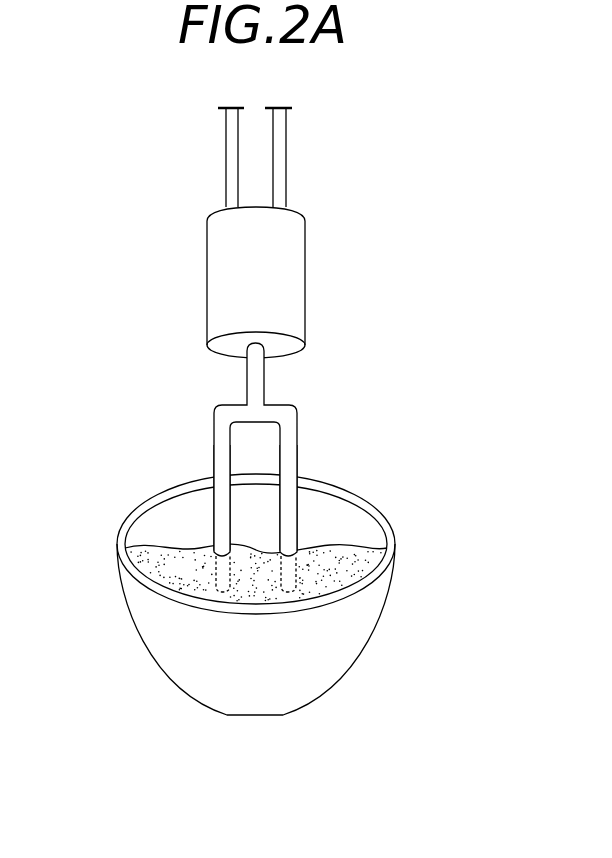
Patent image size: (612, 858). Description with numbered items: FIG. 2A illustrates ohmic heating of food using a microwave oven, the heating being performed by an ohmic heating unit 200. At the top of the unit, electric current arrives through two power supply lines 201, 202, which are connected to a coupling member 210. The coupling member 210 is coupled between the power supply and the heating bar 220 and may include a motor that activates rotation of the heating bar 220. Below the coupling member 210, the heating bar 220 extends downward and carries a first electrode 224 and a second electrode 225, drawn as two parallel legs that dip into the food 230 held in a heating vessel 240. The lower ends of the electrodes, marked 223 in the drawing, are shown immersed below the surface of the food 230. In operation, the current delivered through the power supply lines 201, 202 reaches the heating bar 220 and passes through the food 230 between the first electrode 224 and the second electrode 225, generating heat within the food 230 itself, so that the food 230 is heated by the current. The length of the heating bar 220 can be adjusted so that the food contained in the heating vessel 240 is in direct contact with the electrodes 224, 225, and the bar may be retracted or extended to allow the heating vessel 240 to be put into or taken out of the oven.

The ohmic heating unit 200 is at (326, 226).
The power supply line 201 is at (225, 127).
The power supply line 202 is at (287, 125).
The coupling member 210 is at (290, 273).
The heating bar 220 is at (293, 408).
The probe tips 223 is at (288, 594).
The first electrode 224 is at (212, 447).
The second electrode 225 is at (298, 445).
The food 230 is at (343, 557).
The heating vessel 240 is at (348, 657).